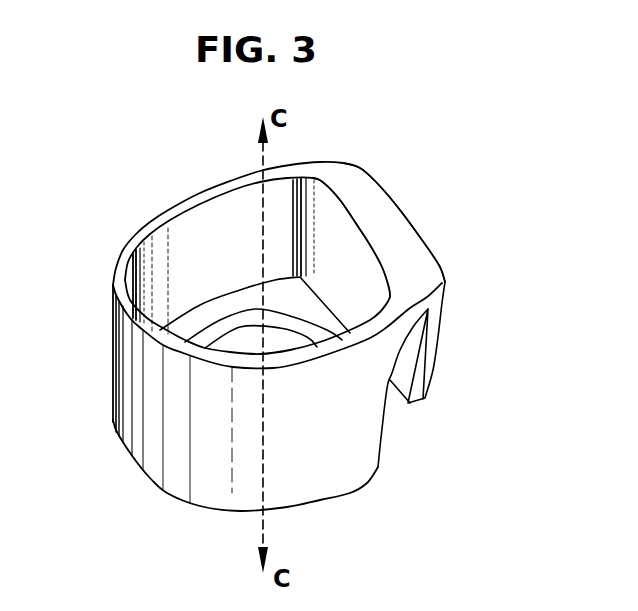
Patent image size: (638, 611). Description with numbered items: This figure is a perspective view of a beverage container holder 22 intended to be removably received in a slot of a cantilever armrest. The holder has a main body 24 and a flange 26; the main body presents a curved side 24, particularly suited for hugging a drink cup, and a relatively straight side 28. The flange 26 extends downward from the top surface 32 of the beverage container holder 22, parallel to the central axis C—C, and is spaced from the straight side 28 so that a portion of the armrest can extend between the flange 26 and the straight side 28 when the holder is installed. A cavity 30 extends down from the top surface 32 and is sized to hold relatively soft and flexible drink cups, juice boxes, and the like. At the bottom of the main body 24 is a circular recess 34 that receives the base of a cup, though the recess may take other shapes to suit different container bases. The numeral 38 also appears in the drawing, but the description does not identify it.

The beverage container holder 22 is at (428, 182).
The curved side 24 is at (153, 393).
The flange 26 is at (430, 347).
The straight side 28 is at (392, 429).
The cavity 30 is at (225, 226).
The top surface 32 is at (410, 263).
The circular recess 34 is at (303, 330).
The inner wall ribs 38 is at (147, 294).